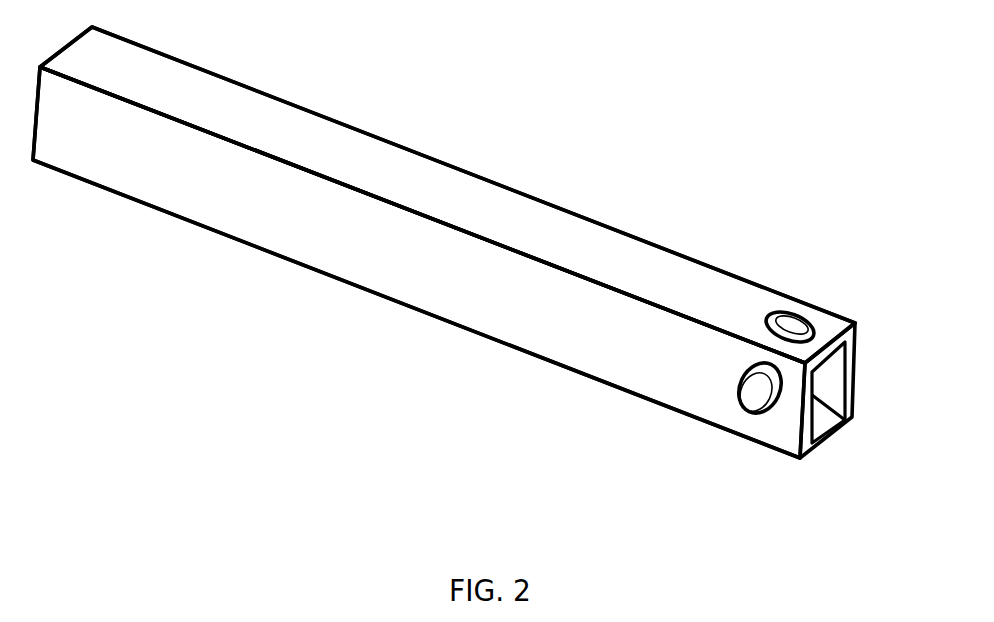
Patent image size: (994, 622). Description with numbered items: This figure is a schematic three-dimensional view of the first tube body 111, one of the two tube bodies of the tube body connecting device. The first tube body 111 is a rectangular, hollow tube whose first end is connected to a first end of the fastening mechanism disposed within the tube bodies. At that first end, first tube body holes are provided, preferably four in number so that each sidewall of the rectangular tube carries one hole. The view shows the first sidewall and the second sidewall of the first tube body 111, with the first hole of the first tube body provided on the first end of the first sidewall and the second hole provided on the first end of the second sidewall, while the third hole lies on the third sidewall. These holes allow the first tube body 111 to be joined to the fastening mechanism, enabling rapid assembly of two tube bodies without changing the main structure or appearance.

The first tube body 111 is at (695, 117).